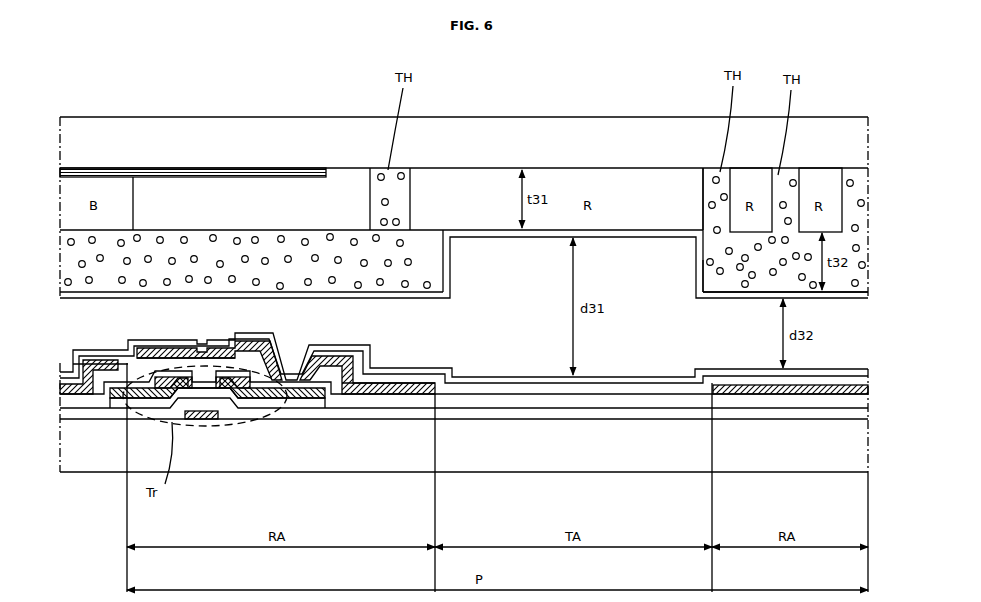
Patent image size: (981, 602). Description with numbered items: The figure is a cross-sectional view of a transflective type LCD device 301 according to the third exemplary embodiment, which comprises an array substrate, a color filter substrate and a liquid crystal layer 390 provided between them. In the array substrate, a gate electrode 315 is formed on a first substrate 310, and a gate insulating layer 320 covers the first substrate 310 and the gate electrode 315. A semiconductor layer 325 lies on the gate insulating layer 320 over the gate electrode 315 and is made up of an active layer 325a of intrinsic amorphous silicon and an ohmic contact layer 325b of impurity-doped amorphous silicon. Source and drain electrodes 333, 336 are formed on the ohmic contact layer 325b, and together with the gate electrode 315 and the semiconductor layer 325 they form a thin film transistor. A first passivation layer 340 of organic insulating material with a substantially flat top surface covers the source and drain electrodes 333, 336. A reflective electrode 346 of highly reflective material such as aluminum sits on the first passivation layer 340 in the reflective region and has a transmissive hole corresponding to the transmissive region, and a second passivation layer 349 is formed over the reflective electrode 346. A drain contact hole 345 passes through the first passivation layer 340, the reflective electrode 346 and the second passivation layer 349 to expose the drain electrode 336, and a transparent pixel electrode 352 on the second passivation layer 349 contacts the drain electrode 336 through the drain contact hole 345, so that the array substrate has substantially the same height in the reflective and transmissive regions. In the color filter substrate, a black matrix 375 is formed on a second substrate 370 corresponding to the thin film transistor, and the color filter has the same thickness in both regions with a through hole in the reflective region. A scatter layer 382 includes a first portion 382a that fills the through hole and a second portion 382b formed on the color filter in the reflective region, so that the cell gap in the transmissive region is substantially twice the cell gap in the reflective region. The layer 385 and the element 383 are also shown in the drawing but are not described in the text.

The transflective type LCD device 301 is at (806, 98).
The second substrate 370 is at (855, 149).
The black matrix 375 is at (253, 168).
The overcoat layer 385 is at (550, 238).
The scatter layer 382 is at (632, 270).
The first portion 382a is at (716, 212).
The second portion 382b is at (740, 264).
The color filter layer 383 is at (743, 289).
The liquid crystal layer 390 is at (846, 293).
The pixel electrode 352 is at (433, 367).
The second passivation layer 349 is at (395, 378).
The reflective electrode 346 is at (403, 394).
The drain contact hole 345 is at (292, 368).
The first passivation layer 340 is at (365, 405).
The source electrode 333 is at (163, 377).
The drain electrode 336 is at (233, 377).
The semiconductor layer 325 is at (223, 449).
The active layer 325a is at (280, 408).
The ohmic contact layer 325b is at (298, 400).
The gate insulating layer 320 is at (508, 419).
The gate electrode 315 is at (210, 420).
The first substrate 310 is at (854, 449).